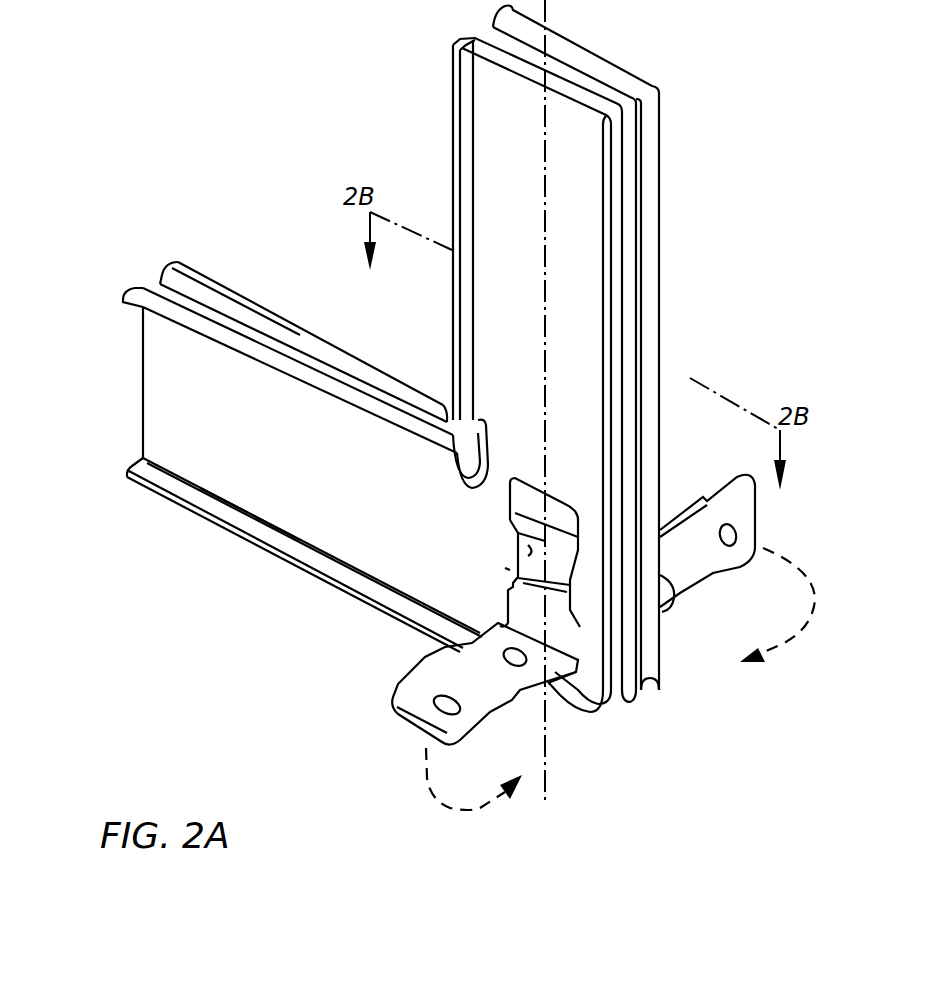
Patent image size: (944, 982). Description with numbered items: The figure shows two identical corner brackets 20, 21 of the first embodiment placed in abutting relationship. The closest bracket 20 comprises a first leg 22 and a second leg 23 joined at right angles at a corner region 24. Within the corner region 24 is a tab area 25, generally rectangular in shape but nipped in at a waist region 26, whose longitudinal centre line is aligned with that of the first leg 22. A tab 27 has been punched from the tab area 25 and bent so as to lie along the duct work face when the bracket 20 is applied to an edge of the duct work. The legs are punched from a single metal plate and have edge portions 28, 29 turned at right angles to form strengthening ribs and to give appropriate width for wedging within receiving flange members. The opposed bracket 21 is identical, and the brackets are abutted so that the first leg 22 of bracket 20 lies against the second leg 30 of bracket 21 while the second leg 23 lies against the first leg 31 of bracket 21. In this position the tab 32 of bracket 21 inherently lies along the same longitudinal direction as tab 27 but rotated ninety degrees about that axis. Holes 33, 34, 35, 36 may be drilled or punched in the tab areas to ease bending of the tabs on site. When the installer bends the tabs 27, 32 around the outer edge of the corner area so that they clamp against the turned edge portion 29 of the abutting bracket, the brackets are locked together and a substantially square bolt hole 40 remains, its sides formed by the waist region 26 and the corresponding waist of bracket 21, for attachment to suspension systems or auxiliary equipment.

The bracket 20 is at (256, 446).
The bracket 21 is at (590, 431).
The first leg 22 is at (492, 108).
The second leg 23 is at (275, 507).
The corner region 24 is at (612, 745).
The tab area 25 is at (510, 568).
The waist region 26 is at (528, 550).
The tab 27 is at (435, 716).
The edge portion 28 is at (240, 347).
The edge portion 29 is at (185, 498).
The second leg 30 is at (620, 70).
The first leg 31 is at (348, 363).
The tab 32 is at (756, 574).
The hole 33 is at (432, 714).
The hole 34 is at (468, 648).
The hole 35 is at (668, 600).
The hole 36 is at (737, 537).
The bolt hole 40 is at (556, 548).